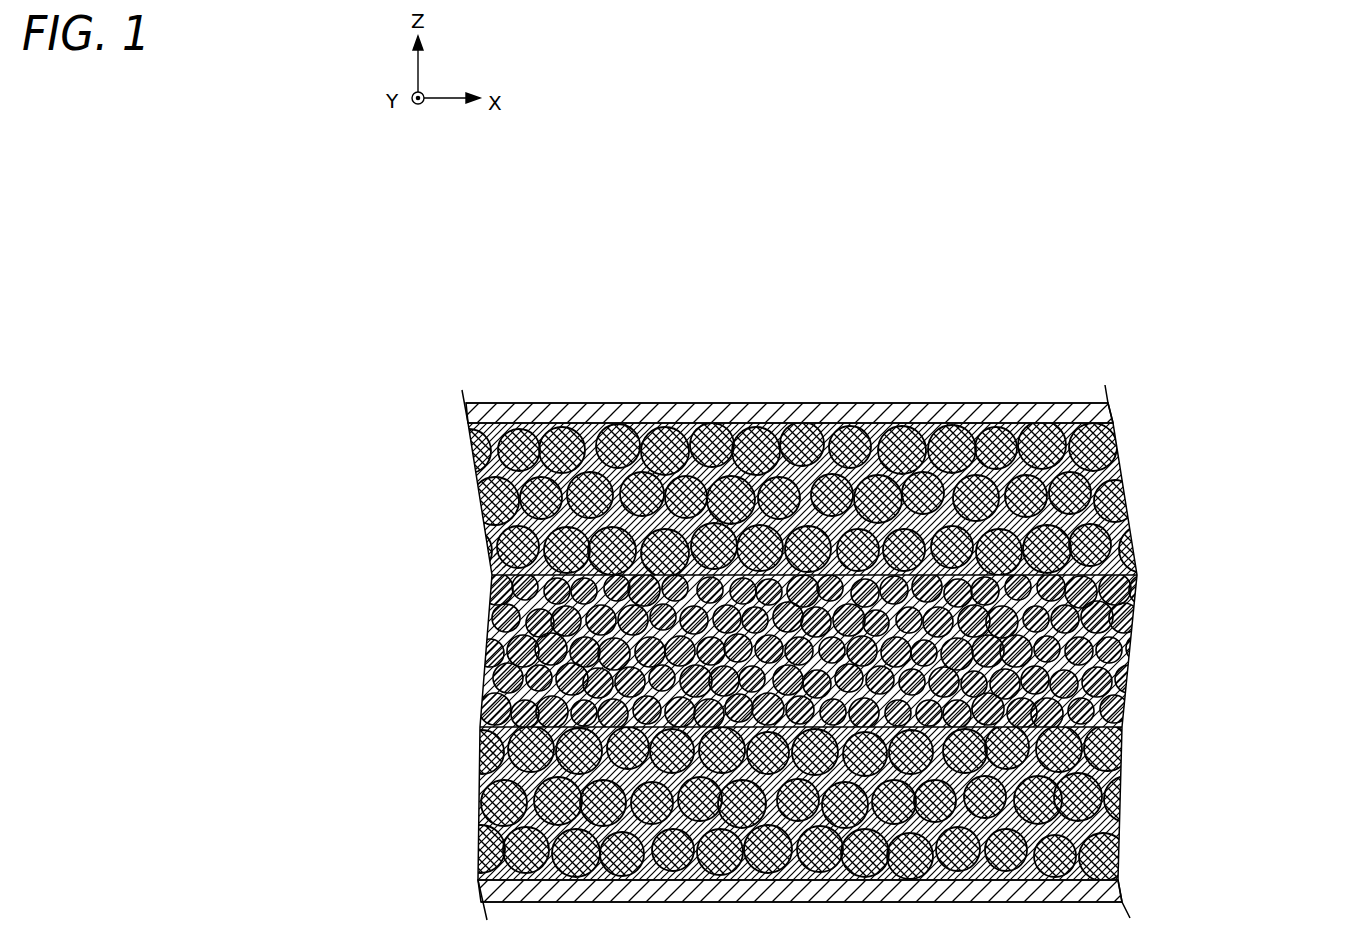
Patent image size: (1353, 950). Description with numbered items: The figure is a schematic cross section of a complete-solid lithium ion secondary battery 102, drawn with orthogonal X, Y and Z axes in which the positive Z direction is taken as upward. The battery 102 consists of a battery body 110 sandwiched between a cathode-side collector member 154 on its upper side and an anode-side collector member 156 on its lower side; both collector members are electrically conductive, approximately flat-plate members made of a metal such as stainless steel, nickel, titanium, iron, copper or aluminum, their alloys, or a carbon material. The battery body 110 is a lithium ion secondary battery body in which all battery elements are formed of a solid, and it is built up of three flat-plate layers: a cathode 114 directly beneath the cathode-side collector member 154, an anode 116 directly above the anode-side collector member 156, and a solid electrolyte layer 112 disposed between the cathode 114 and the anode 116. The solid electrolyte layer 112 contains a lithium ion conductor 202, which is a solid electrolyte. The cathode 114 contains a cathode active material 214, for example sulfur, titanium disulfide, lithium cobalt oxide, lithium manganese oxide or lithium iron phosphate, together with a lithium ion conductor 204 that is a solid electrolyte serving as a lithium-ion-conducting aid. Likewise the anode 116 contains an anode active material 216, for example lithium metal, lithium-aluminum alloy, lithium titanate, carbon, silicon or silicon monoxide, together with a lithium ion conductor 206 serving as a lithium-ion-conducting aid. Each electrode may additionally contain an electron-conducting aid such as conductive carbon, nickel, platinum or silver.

The complete-solid lithium ion secondary battery 102 is at (1028, 289).
The battery body 110 is at (1257, 478).
The solid electrolyte layer 112 is at (804, 652).
The cathode 114 is at (813, 500).
The anode 116 is at (810, 804).
The cathode-side collector member 154 is at (1108, 410).
The anode-side collector member 156 is at (1110, 895).
The lithium ion conductor 202 is at (492, 640).
The lithium ion conductor 204 is at (494, 486).
The lithium ion conductor 206 is at (484, 800).
The cathode active material 214 is at (494, 556).
The anode active material 216 is at (480, 746).